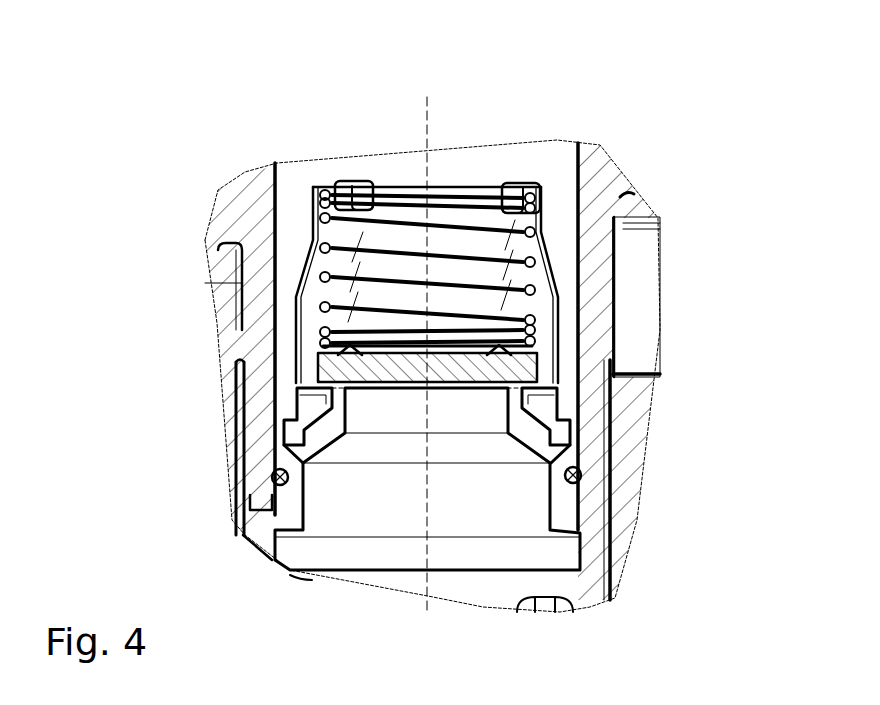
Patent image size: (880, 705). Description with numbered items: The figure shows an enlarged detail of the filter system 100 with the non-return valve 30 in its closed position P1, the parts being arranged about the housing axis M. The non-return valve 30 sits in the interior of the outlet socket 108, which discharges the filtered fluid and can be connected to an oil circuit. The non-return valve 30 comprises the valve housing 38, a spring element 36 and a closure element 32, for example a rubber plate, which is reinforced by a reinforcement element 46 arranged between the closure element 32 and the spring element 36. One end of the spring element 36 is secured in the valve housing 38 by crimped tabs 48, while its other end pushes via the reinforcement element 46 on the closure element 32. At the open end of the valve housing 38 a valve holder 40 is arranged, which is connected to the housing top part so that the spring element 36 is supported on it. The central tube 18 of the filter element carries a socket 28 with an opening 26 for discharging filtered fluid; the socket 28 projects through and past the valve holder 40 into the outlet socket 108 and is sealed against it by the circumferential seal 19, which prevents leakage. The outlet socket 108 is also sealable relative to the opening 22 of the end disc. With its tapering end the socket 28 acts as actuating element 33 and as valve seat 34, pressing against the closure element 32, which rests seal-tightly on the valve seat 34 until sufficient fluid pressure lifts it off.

The filter system 100 is at (640, 109).
The closed position P1 is at (221, 152).
The housing axis M is at (407, 346).
The central tube 18 is at (615, 581).
The circumferential seal 19 is at (605, 483).
The opening 22 is at (578, 160).
The opening 26 is at (483, 509).
The socket 28 is at (343, 393).
The non-return valve 30 is at (473, 187).
The closure element 32 is at (490, 355).
The actuating element 33 is at (250, 423).
The valve seat 34 is at (565, 385).
The spring element 36 is at (328, 282).
The valve housing 38 is at (560, 258).
The valve holder 40 is at (580, 430).
The reinforcement element 46 is at (318, 357).
The crimped tabs 48 is at (358, 187).
The outlet socket 108 is at (617, 305).